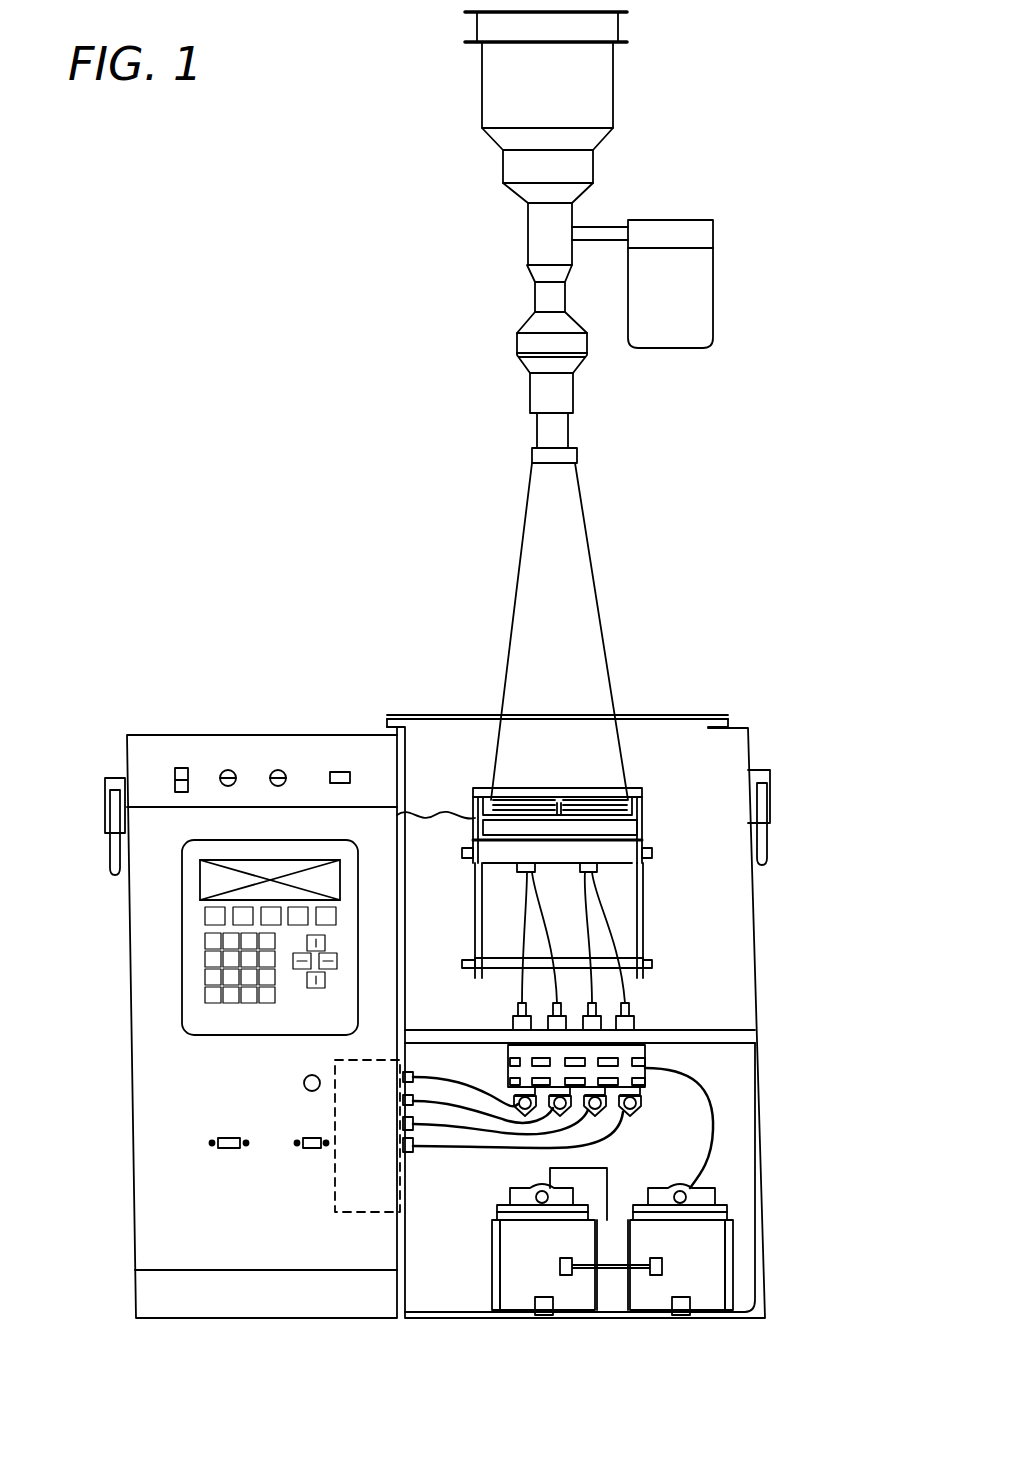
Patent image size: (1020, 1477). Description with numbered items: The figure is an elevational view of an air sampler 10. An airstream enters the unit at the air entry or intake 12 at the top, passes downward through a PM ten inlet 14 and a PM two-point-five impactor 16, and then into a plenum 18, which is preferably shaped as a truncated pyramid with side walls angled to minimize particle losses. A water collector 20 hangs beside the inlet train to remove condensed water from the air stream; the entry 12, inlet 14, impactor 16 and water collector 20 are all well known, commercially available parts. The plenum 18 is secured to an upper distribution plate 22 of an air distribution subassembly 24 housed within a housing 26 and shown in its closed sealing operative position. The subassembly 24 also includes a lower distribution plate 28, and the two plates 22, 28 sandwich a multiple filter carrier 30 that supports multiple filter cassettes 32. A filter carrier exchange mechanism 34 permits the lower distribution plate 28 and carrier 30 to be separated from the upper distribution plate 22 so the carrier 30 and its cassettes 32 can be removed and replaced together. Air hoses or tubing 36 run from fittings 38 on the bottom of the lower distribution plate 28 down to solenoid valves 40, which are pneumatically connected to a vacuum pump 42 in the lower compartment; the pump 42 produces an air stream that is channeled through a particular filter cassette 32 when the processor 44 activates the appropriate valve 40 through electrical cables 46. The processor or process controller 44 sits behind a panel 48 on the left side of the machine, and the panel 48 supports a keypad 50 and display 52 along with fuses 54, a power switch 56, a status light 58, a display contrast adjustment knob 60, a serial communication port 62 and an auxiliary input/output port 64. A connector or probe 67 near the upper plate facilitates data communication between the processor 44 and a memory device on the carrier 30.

The air sampler 10 is at (322, 484).
The air entry 12 is at (632, 20).
The PM10 inlet 14 is at (616, 85).
The PM2.5 impactor 16 is at (579, 342).
The plenum 18 is at (598, 578).
The water collector 20 is at (700, 292).
The upper distribution plate 22 is at (640, 760).
The air distribution subassembly 24 is at (452, 891).
The housing 26 is at (752, 922).
The lower distribution plate 28 is at (622, 852).
The multiple filter carrier 30 is at (646, 829).
The filter cassettes 32 is at (634, 805).
The filter carrier exchange mechanism 34 is at (476, 921).
The air hoses 36 is at (557, 988).
The fittings 38 is at (581, 873).
The solenoid valves 40 is at (508, 1066).
The vacuum pump 42 is at (712, 1255).
The processor 44 is at (360, 1185).
The electrical cables 46 is at (600, 1148).
The panel 48 is at (152, 1188).
The keypad 50 is at (207, 957).
The display 52 is at (210, 880).
The fuses 54 is at (277, 769).
The power switch 56 is at (176, 766).
The status light 58 is at (340, 771).
The display contrast adjustment knob 60 is at (304, 1079).
The RS-232 port 62 is at (308, 1136).
The auxiliary input/output port 64 is at (226, 1136).
The connector or probe 67 is at (494, 812).